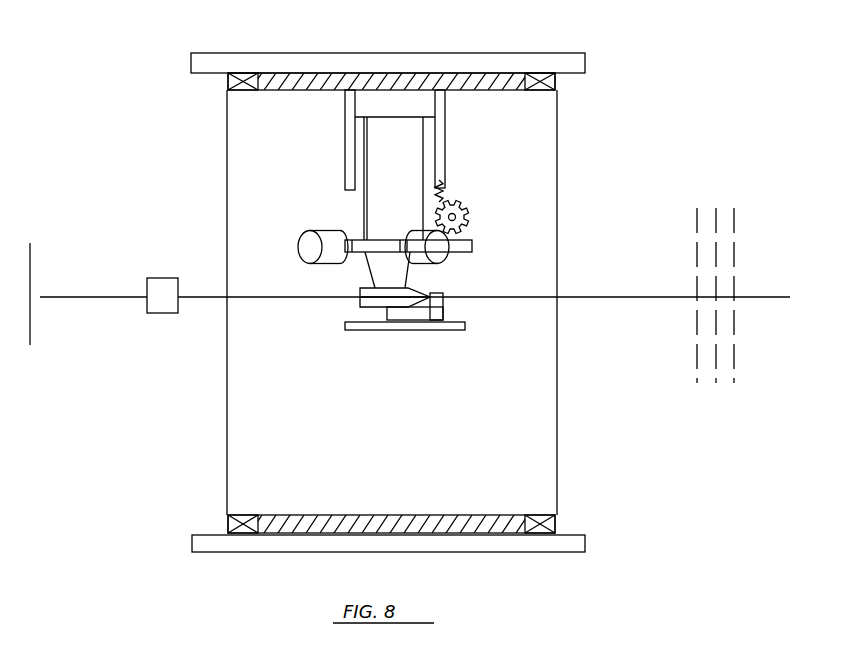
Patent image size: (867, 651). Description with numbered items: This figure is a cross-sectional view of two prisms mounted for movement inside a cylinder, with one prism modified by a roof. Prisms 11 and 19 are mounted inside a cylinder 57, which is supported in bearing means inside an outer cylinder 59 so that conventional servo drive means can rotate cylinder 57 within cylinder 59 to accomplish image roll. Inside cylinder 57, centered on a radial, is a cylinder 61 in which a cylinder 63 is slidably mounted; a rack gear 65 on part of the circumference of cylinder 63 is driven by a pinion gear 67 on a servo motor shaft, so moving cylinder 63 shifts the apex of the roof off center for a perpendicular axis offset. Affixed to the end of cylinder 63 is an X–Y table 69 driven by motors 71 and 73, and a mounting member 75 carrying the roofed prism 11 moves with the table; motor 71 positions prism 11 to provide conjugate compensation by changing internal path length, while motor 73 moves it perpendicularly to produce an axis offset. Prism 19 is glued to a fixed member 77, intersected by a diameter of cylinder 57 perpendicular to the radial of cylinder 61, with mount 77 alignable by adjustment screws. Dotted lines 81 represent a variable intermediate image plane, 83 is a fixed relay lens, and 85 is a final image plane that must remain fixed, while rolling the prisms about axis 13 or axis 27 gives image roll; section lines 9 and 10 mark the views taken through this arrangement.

The cylinder 59 is at (548, 53).
The cylinder 57 is at (558, 112).
The cylinder 61 is at (445, 150).
The cylinder 63 is at (381, 115).
The rack gear 65 is at (466, 184).
The pinion gear 67 is at (468, 213).
The X–Y table 69 is at (472, 246).
The motor 71 is at (316, 232).
The motor 73 is at (442, 258).
The mounting member 75 is at (369, 264).
The prism 19 is at (437, 302).
The prism 11 is at (362, 300).
The member 77 is at (465, 326).
The final image plane 85 is at (30, 258).
The axis 13 is at (88, 297).
The fixed relay lens 83 is at (160, 278).
The axis 27 is at (597, 297).
The intermediate image plane 81 is at (697, 208).
The section line 10 is at (255, 280).
The section line 9 is at (340, 313).